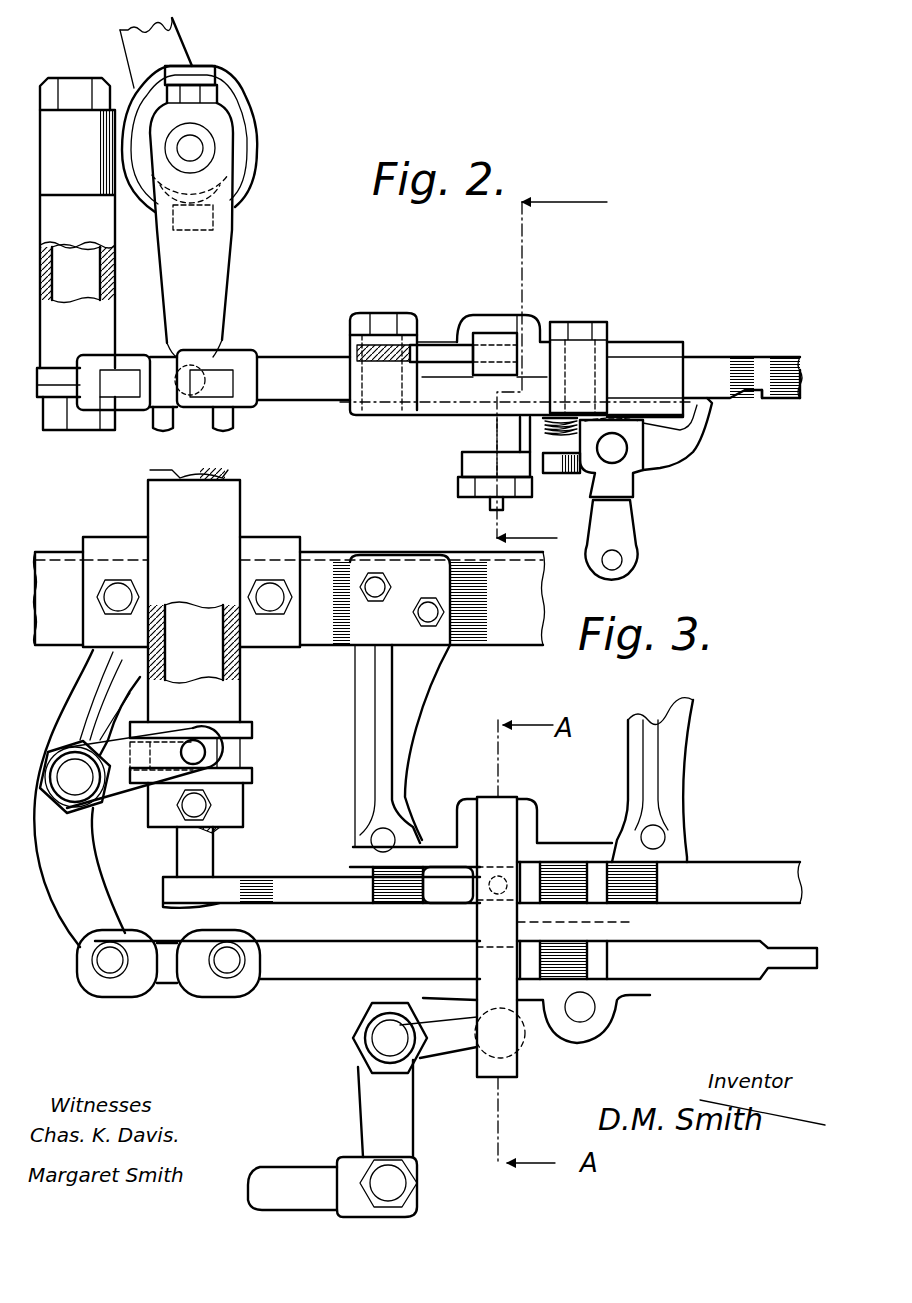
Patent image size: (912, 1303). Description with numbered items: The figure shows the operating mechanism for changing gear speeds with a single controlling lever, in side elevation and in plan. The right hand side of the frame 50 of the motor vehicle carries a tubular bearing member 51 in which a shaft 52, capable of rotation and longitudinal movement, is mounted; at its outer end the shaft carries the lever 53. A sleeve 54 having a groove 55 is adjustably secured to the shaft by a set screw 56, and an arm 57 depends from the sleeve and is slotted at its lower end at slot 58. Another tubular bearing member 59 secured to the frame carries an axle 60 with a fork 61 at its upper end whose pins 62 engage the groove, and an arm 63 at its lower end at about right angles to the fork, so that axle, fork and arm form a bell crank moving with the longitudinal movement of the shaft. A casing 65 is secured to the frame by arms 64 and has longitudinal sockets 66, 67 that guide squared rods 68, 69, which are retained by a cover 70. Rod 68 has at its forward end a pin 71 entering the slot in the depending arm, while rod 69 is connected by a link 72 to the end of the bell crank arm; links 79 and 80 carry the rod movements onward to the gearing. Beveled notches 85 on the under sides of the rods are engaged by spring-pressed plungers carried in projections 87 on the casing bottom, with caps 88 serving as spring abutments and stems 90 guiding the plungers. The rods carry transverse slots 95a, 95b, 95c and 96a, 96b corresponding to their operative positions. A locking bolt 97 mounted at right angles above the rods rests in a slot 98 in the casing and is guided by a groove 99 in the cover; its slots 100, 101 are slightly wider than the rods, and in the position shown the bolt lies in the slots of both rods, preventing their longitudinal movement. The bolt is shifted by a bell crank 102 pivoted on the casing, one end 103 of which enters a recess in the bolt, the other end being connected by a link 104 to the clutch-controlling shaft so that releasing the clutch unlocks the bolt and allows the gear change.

In FIG. 3, the frame 50 is at (377, 555).
In FIG. 3, the tubular bearing member 51 is at (230, 672).
In FIG. 3, the shaft 52 is at (225, 475).
In FIG. 2, the lever 53 is at (122, 34).
In FIG. 2, the sleeve 54 is at (228, 133).
In FIG. 3, the sleeve 54 is at (237, 733).
In FIG. 3, the groove 55 is at (250, 762).
In FIG. 2, the set screw 56 is at (218, 94).
In FIG. 3, the set screw 56 is at (187, 810).
In FIG. 2, the arm 57 is at (215, 268).
In FIG. 2, the slot 58 is at (195, 425).
In FIG. 2, the tubular bearing member 59 is at (77, 292).
In FIG. 2, the axle 60 is at (70, 78).
In FIG. 2, the fork 61 is at (153, 76).
In FIG. 3, the fork 61 is at (125, 806).
In FIG. 2, the pins 62 is at (195, 80).
In FIG. 3, the pins 62 is at (203, 757).
In FIG. 2, the arm 63 is at (62, 385).
In FIG. 3, the arm 63 is at (70, 918).
In FIG. 3, the arms 64 is at (360, 705).
In FIG. 2, the casing 65 is at (672, 372).
In FIG. 3, the casing 65 is at (590, 845).
In FIG. 3, the socket 66 is at (350, 840).
In FIG. 3, the socket 67 is at (355, 998).
In FIG. 3, the rod 68 is at (293, 877).
In FIG. 2, the rod 69 is at (292, 372).
In FIG. 3, the rod 69 is at (300, 980).
In FIG. 2, the cover 70 is at (648, 342).
In FIG. 3, the pin 71 is at (205, 862).
In FIG. 2, the link 72 is at (222, 362).
In FIG. 3, the link 72 is at (200, 990).
In FIG. 2, the link 79 is at (792, 400).
In FIG. 2, the link 80 is at (713, 405).
In FIG. 3, the notches 85 is at (570, 860).
In FIG. 2, the projections 87 is at (476, 435).
In FIG. 2, the caps 88 is at (468, 470).
In FIG. 2, the stems 90 is at (500, 503).
In FIG. 3, the transverse slot 95a is at (385, 895).
In FIG. 3, the transverse slot 95b is at (550, 860).
In FIG. 3, the transverse slot 95c is at (448, 885).
In FIG. 3, the transverse slot 96a is at (580, 1008).
In FIG. 3, the transverse slot 96b is at (475, 955).
In FIG. 2, the locking bolt 97 is at (480, 338).
In FIG. 3, the locking bolt 97 is at (488, 1070).
In FIG. 2, the slot 98 is at (477, 380).
In FIG. 2, the groove 99 is at (528, 318).
In FIG. 3, the slot 100 is at (495, 855).
In FIG. 3, the slot 101 is at (588, 921).
In FIG. 2, the bell crank 102 is at (438, 343).
In FIG. 3, the bell crank 102 is at (450, 1045).
In FIG. 3, the end 103 is at (522, 1040).
In FIG. 3, the link 104 is at (305, 1180).